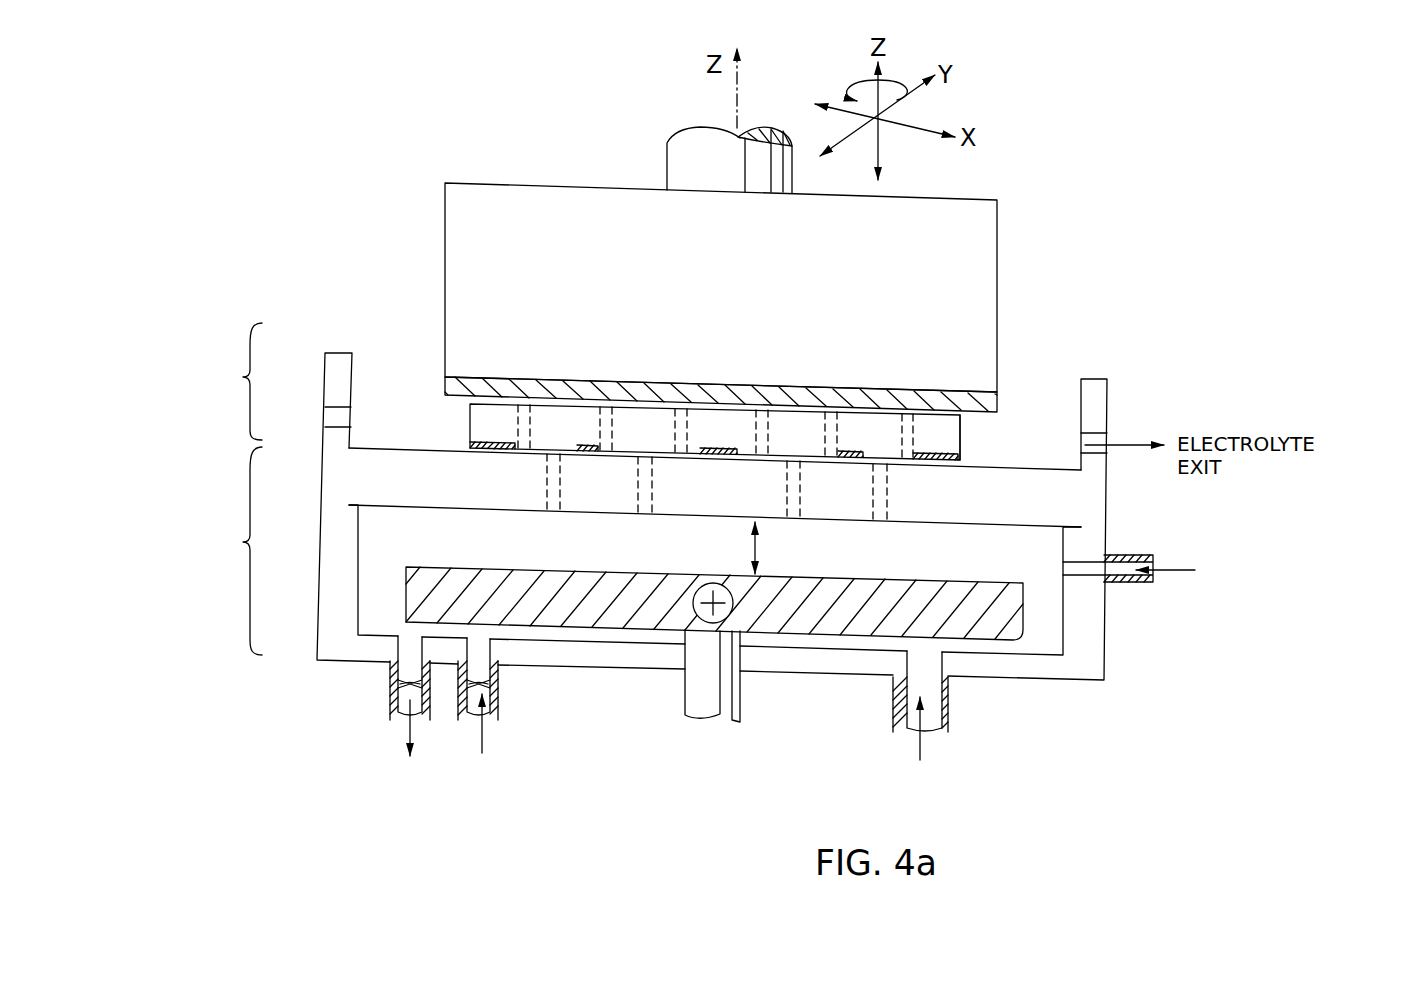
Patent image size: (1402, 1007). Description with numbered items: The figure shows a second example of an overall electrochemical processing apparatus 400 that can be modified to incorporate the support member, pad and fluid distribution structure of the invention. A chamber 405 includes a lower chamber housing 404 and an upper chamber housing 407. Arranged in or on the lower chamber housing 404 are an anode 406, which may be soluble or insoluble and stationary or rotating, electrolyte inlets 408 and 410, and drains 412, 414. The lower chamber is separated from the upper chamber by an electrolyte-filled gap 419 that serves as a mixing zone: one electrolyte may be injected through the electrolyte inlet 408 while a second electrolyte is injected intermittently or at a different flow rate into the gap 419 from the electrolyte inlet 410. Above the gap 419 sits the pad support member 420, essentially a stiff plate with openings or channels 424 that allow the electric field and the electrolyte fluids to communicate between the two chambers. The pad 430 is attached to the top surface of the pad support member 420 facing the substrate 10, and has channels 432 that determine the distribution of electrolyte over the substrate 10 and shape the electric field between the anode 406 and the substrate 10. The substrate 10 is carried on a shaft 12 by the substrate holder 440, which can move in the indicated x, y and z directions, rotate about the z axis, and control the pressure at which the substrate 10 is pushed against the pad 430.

The electrochemical processing apparatus 400 is at (441, 166).
The shaft 12 is at (678, 157).
The substrate holder 440 is at (756, 333).
The substrate 10 is at (995, 404).
The pad 430 is at (961, 440).
The channels 432 is at (515, 430).
The channels 424 is at (553, 500).
The pad support member 420 is at (1055, 498).
The electrolyte gap 419 is at (760, 548).
The anode 406 is at (985, 560).
The electrolyte inlet 410 is at (1136, 556).
The electrolyte inlet 408 is at (926, 742).
The drain 412 is at (390, 713).
The drain 414 is at (500, 713).
The chamber 405 is at (1108, 666).
The upper chamber housing 407 is at (175, 381).
The lower chamber housing 404 is at (172, 551).